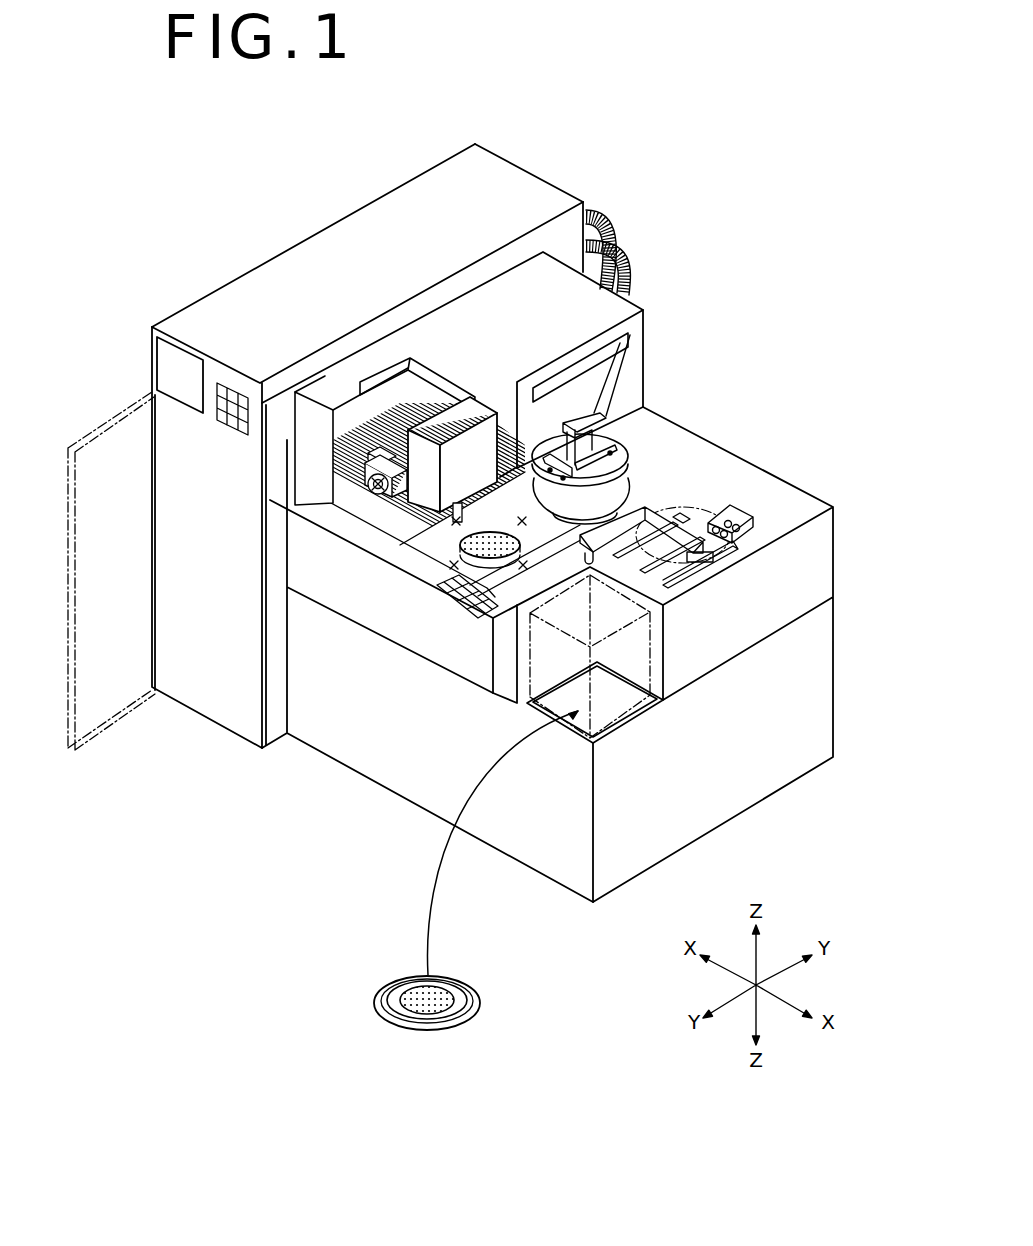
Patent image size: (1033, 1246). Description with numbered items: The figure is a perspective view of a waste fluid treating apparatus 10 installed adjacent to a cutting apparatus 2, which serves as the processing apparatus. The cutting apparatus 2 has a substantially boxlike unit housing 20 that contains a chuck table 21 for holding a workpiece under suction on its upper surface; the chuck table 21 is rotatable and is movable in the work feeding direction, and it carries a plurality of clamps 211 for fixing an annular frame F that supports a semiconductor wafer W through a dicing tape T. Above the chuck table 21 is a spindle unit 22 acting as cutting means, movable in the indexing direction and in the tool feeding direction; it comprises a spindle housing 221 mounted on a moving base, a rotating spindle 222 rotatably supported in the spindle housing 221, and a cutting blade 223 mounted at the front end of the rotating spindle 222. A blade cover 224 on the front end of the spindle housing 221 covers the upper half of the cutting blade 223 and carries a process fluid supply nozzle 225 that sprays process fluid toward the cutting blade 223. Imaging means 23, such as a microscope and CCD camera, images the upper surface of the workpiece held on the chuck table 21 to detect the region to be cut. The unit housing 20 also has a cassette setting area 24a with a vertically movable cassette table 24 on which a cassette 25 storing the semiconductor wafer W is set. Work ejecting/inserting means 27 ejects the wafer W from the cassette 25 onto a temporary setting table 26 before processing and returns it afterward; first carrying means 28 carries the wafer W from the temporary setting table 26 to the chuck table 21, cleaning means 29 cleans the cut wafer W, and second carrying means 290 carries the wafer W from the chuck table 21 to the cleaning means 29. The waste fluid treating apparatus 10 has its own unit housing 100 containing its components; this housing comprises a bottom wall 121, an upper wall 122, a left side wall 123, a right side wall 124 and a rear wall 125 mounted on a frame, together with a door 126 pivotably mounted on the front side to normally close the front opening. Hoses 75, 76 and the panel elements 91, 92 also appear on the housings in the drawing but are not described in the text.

The cutting apparatus 2 is at (760, 353).
The waste fluid treating apparatus 10 is at (491, 122).
The unit housing 20 is at (730, 448).
The chuck table 21 is at (452, 551).
The clamps 211 is at (470, 610).
The spindle unit 22 is at (405, 437).
The spindle housing 221 is at (378, 436).
The rotating spindle 222 is at (325, 488).
The cutting blade 223 is at (382, 495).
The blade cover 224 is at (372, 440).
The process fluid supply nozzle 225 is at (358, 497).
The imaging means 23 is at (478, 498).
The cassette table 24 is at (563, 728).
The cassette setting area 24a is at (637, 720).
The cassette 25 is at (650, 658).
The temporary setting table 26 is at (688, 587).
The work ejecting/inserting means 27 is at (738, 513).
The first carrying means 28 is at (630, 510).
The cleaning means 29 is at (610, 497).
The second carrying means 290 is at (622, 368).
The hose 75 is at (614, 245).
The hose 76 is at (636, 266).
The operation keys 91 is at (236, 400).
The display 92 is at (178, 364).
The unit housing 100 is at (276, 251).
The bottom wall 121 is at (283, 740).
The upper wall 122 is at (368, 215).
The left side wall 123 is at (222, 283).
The right side wall 124 is at (588, 216).
The rear wall 125 is at (522, 160).
The door 126 is at (117, 723).
The semiconductor wafer W is at (412, 993).
The dicing tape T is at (385, 998).
The annular frame F is at (475, 995).